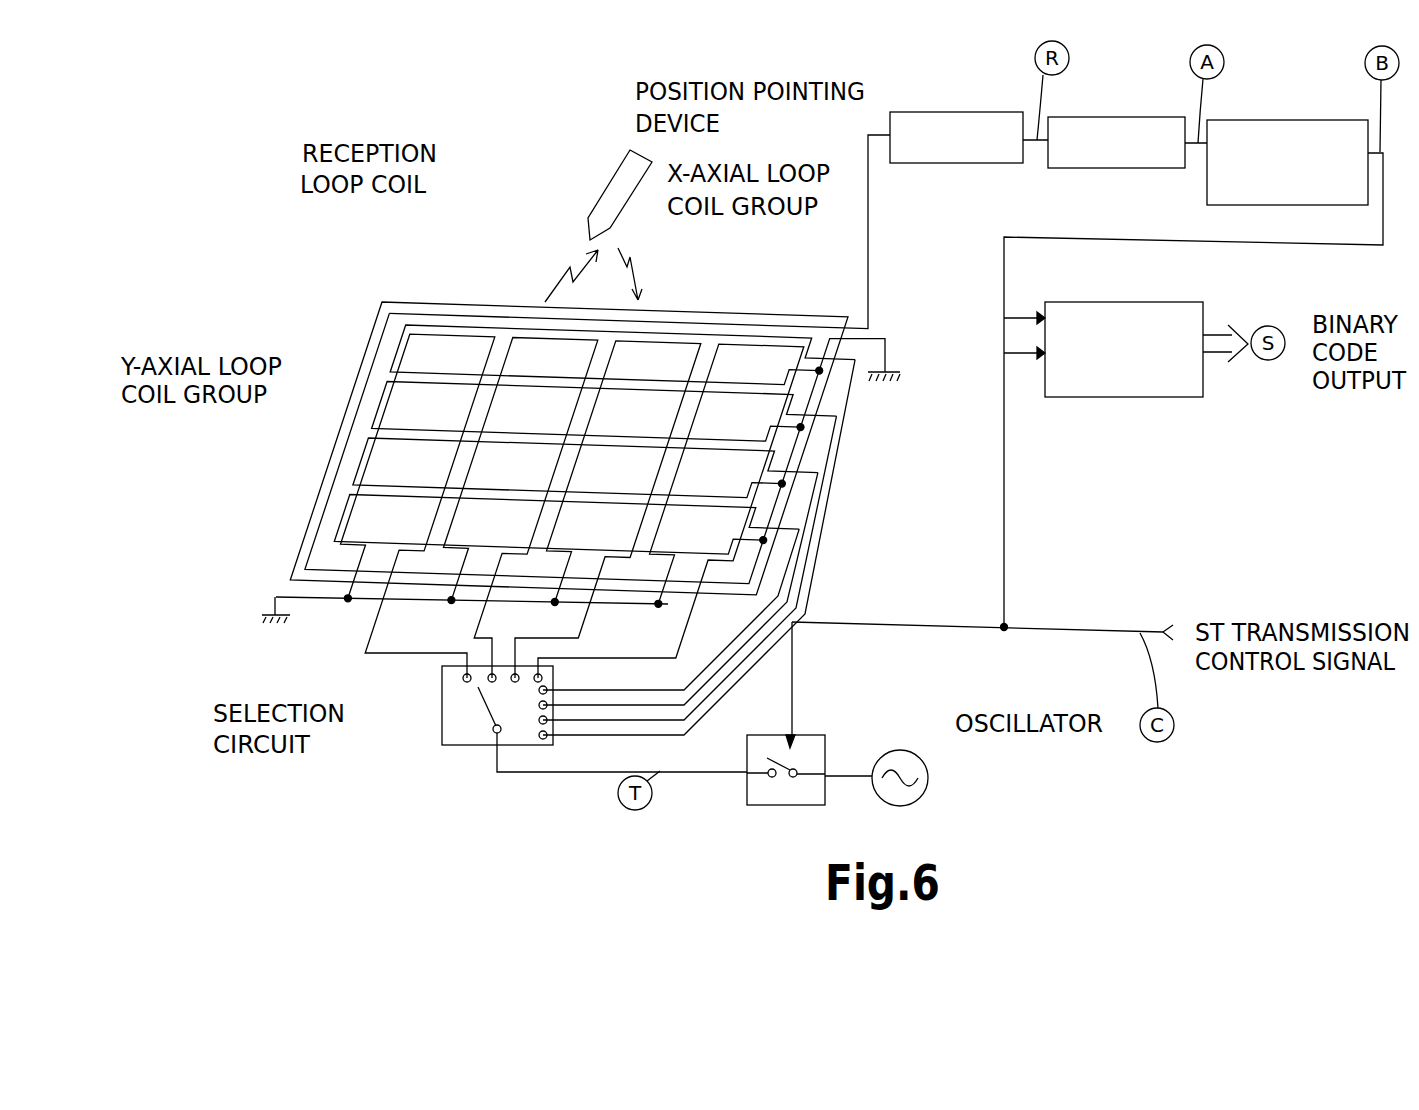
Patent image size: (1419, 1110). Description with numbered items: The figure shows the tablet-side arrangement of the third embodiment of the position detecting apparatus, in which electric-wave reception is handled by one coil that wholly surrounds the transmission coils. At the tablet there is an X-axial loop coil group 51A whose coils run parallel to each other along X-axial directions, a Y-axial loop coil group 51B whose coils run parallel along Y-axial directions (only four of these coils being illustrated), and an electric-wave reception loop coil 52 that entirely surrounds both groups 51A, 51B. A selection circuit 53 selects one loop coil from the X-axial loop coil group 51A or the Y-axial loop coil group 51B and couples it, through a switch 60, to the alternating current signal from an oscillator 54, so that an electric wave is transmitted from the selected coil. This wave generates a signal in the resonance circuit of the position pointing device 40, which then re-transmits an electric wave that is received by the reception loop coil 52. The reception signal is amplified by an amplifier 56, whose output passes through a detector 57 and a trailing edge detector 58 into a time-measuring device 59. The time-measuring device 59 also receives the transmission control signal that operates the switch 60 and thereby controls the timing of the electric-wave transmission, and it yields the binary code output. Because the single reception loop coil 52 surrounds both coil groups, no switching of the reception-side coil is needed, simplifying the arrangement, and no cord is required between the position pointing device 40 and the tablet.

The position pointing device 40 is at (606, 180).
The X-axial loop coil group 51A is at (752, 315).
The Y-axial loop coil group 51B is at (343, 514).
The electric-wave reception loop coil 52 is at (385, 300).
The selection circuit 53 is at (440, 706).
The oscillator 54 is at (918, 752).
The amplifier 56 is at (912, 112).
The detector 57 is at (1098, 117).
The trailing edge detector 58 is at (1272, 120).
The time-measuring device 59 is at (1140, 302).
The switch 60 is at (808, 748).